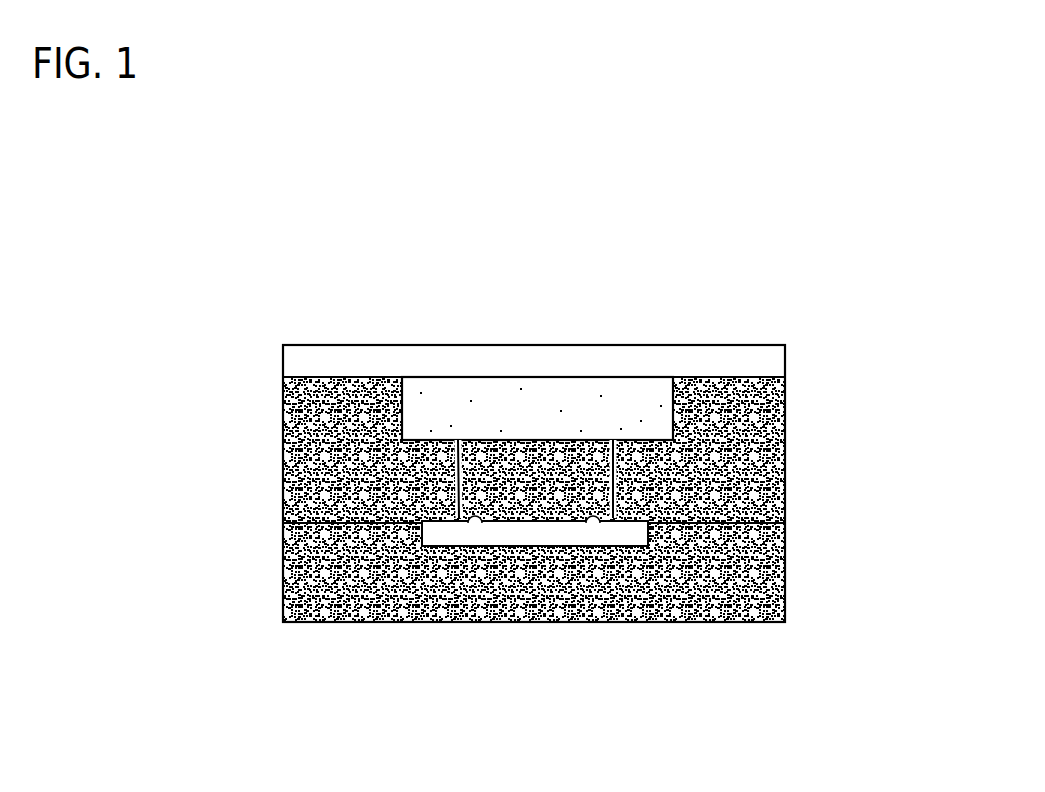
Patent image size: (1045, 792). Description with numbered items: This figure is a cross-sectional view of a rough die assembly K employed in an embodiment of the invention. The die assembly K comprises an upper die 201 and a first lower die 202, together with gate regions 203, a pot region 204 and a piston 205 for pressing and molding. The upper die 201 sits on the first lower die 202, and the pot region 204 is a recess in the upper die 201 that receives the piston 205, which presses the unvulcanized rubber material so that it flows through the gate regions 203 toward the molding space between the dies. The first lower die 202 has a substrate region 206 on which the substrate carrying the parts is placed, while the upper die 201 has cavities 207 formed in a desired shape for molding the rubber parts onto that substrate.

The die assembly K is at (815, 407).
The upper die 201 is at (785, 477).
The first lower die 202 is at (737, 583).
The gate regions 203 is at (614, 445).
The pot region 204 is at (398, 435).
The piston 205 is at (485, 405).
The substrate region 206 is at (470, 537).
The cavities 207 is at (422, 530).